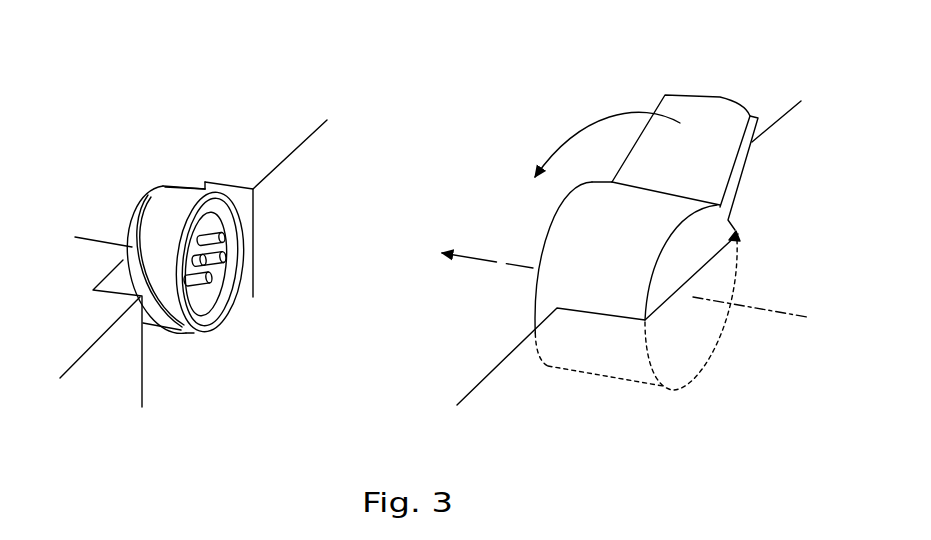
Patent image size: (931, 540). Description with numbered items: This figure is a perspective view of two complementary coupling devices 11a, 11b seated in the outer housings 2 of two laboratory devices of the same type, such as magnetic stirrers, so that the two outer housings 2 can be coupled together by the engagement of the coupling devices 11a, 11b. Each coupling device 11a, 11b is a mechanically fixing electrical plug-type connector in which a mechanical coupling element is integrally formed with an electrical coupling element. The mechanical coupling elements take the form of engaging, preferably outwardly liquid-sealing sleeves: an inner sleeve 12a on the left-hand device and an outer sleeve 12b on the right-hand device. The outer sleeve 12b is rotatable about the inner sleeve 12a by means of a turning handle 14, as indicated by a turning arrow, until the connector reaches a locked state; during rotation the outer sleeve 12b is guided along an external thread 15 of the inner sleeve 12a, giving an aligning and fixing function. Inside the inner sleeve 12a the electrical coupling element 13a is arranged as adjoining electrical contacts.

The outer housing 2 is at (318, 170).
The coupling device 11a is at (206, 350).
The coupling device 11b is at (512, 293).
The inner sleeve 12a is at (149, 233).
The outer sleeve 12b is at (690, 249).
The electrical coupling element 13a is at (223, 258).
The turning handle 14 is at (710, 118).
The external thread 15 is at (166, 212).